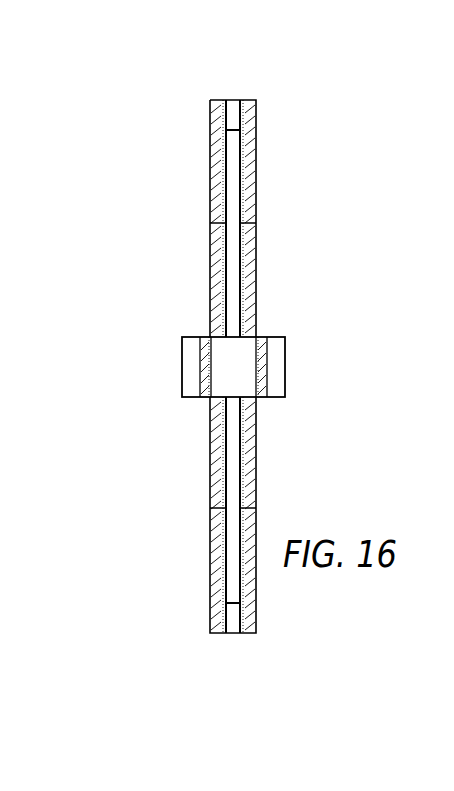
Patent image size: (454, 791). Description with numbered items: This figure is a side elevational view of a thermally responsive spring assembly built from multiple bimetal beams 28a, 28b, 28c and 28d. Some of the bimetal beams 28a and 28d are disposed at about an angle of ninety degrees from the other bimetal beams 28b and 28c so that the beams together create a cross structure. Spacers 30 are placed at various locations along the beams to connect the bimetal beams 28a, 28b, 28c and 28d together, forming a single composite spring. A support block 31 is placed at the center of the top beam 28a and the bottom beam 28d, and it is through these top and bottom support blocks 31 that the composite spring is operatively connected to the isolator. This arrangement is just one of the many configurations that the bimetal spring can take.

The spacer 30 is at (232, 106).
The support block 31 is at (182, 362).
The bimetal beam 28a is at (200, 398).
The bimetal beam 28b is at (212, 636).
The bimetal beam 28c is at (243, 635).
The bimetal beam 28d is at (267, 398).